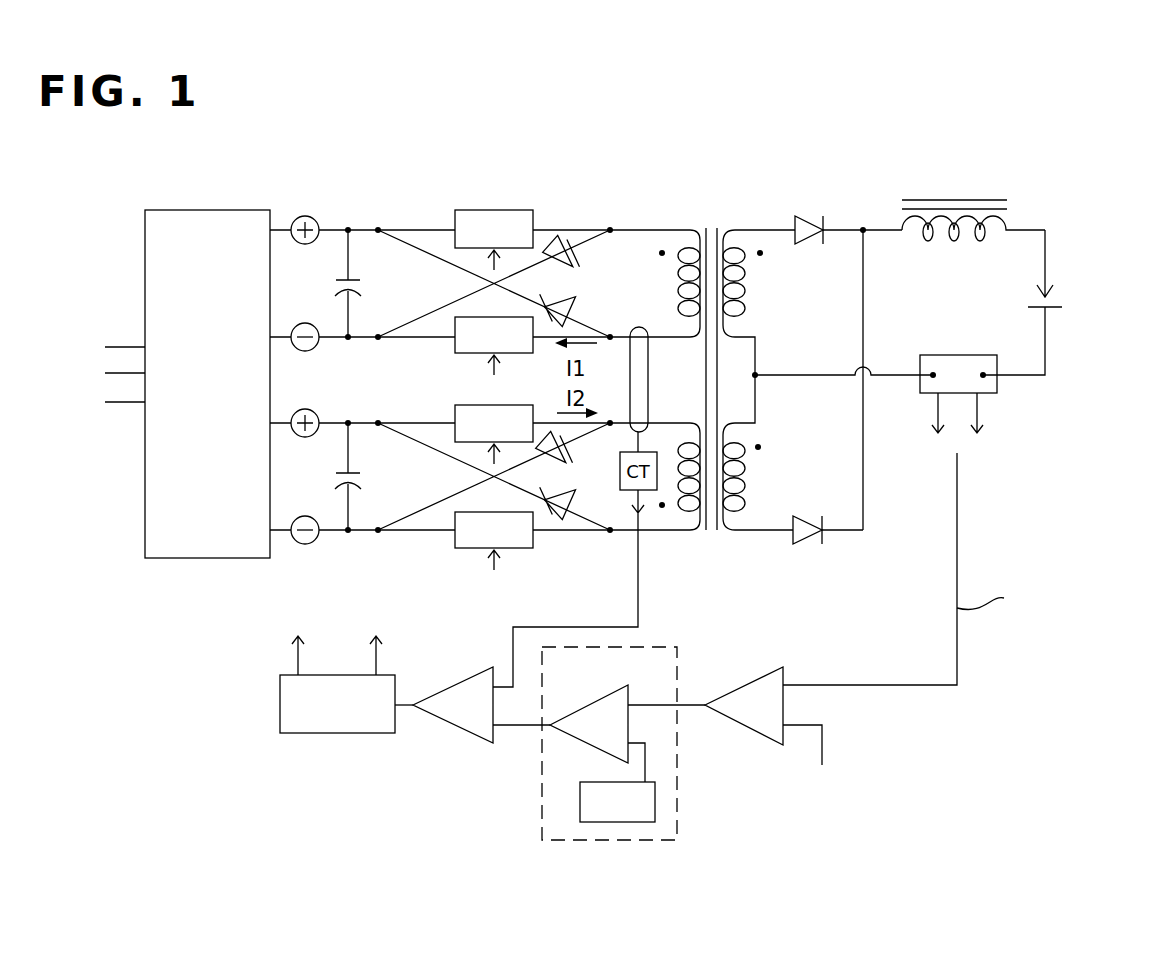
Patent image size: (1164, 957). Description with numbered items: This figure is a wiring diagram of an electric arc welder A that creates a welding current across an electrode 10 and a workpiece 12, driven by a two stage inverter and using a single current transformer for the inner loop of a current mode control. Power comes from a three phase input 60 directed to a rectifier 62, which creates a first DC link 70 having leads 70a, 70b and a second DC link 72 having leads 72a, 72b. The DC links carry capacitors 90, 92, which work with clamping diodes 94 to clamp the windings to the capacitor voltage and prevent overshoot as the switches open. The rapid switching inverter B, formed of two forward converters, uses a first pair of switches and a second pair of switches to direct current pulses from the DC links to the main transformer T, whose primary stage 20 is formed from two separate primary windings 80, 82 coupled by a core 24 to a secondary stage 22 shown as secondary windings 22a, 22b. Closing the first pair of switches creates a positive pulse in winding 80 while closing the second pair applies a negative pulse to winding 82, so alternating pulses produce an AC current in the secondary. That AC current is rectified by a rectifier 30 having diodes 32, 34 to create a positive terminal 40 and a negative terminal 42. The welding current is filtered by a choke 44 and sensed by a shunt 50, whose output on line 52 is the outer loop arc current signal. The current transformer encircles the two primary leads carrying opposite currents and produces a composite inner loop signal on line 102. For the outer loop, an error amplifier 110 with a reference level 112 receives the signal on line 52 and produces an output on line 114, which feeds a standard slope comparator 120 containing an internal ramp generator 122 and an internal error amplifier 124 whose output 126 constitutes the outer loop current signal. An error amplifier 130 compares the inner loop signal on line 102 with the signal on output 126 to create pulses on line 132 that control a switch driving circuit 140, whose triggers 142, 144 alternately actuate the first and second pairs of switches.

The electrode 10 is at (1062, 282).
The workpiece 12 is at (1060, 308).
The primary stage 20 is at (691, 208).
The secondary stage 22 is at (753, 210).
The secondary winding 22a is at (748, 298).
The secondary winding 22b is at (744, 476).
The coupling core 24 is at (711, 532).
The rectifier 30 is at (843, 200).
The diode 32 is at (799, 246).
The diode 34 is at (803, 543).
The positive terminal 40 is at (867, 235).
The negative terminal 42 is at (756, 373).
The choke 44 is at (982, 201).
The shunt 50 is at (993, 394).
The line 52 is at (893, 688).
The three phase input 60 is at (122, 345).
The rectifier 62 is at (210, 210).
The first DC link 70 is at (283, 217).
The lead 70a is at (332, 228).
The lead 70b is at (300, 320).
The second DC link 72 is at (281, 420).
The lead 72a is at (332, 420).
The lead 72b is at (300, 513).
The primary winding 80 is at (676, 283).
The primary winding 82 is at (683, 478).
The capacitor 90 is at (362, 291).
The capacitor 92 is at (362, 484).
The clamping diodes 94 is at (558, 243).
The line 102 is at (545, 627).
The error amplifier 110 is at (790, 683).
The reference level 112 is at (823, 743).
The line 114 is at (691, 707).
The slope comparator 120 is at (660, 843).
The ramp generator 122 is at (627, 823).
The error amplifier 124 is at (577, 739).
The output 126 is at (512, 728).
The error amplifier 130 is at (450, 723).
The line 132 is at (404, 698).
The switch driving circuit 140 is at (338, 735).
The trigger 142 is at (298, 657).
The trigger 144 is at (374, 664).
The electric arc welder A is at (620, 163).
The inverter B is at (502, 188).
The main transformer T is at (726, 197).